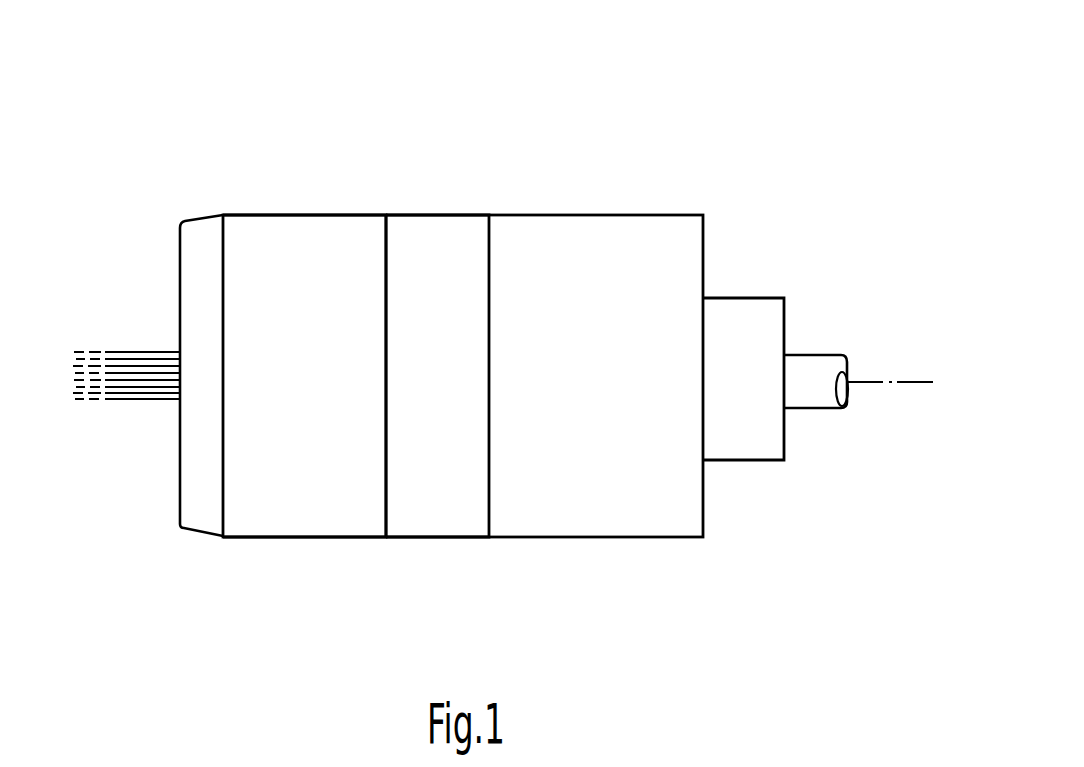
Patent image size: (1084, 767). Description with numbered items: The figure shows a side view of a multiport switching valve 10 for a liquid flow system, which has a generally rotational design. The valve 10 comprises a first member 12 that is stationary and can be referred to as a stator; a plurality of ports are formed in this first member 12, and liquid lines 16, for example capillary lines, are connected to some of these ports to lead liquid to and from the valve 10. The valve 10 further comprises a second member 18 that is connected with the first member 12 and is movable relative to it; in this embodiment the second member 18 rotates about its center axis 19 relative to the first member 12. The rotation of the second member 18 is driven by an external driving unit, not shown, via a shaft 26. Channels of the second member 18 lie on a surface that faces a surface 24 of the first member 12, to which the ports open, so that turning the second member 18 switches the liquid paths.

The multiport switching valve 10 is at (497, 168).
The first member 12 is at (297, 512).
The liquid lines 16 is at (136, 400).
The second member 18 is at (440, 503).
The center axis 19 is at (913, 382).
The surface 24 is at (402, 241).
The shaft 26 is at (807, 375).